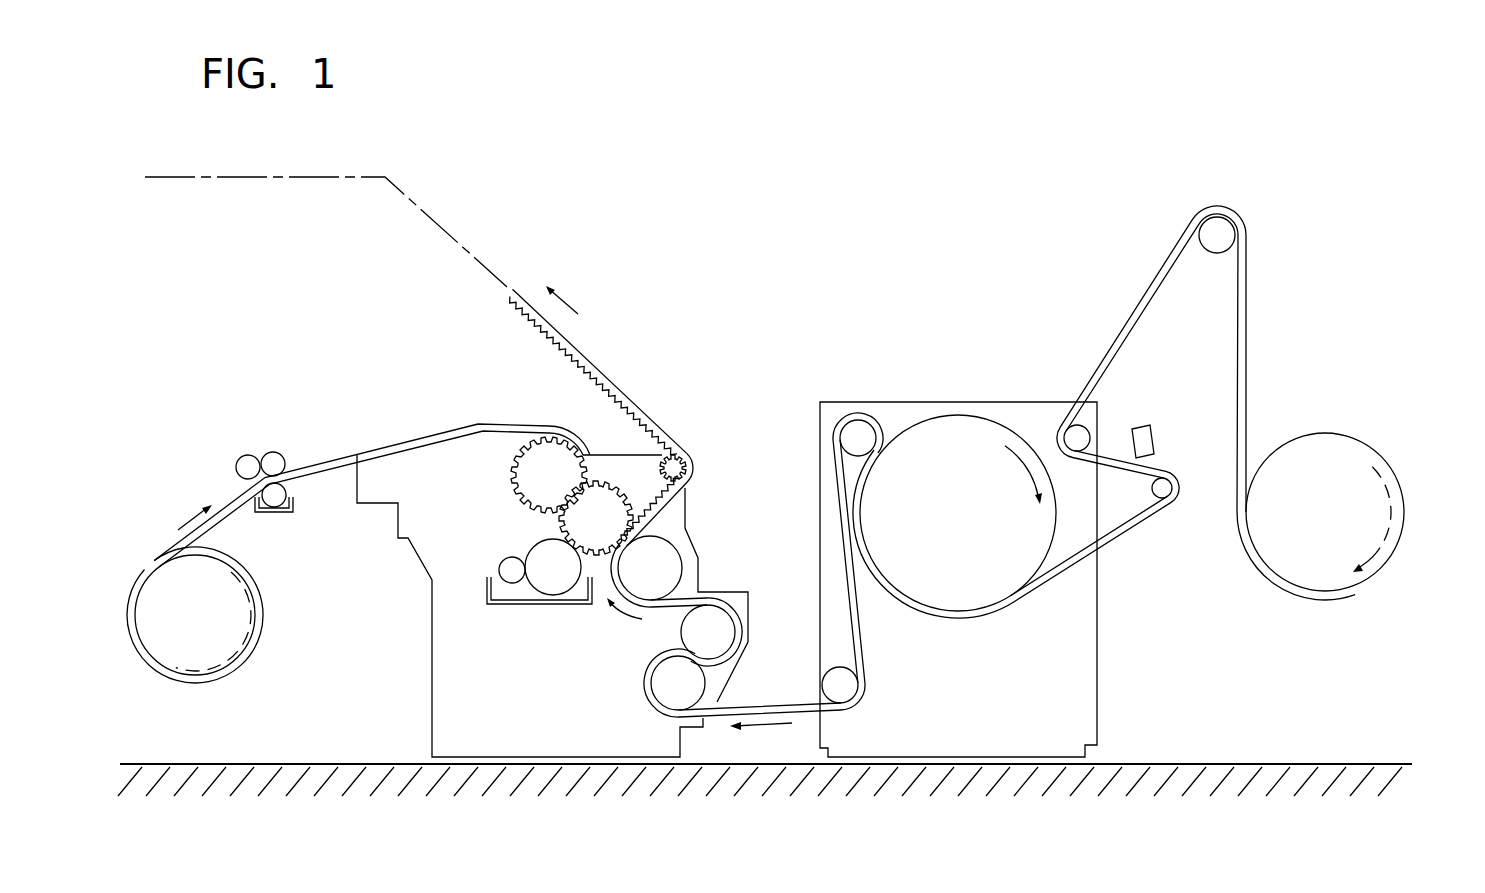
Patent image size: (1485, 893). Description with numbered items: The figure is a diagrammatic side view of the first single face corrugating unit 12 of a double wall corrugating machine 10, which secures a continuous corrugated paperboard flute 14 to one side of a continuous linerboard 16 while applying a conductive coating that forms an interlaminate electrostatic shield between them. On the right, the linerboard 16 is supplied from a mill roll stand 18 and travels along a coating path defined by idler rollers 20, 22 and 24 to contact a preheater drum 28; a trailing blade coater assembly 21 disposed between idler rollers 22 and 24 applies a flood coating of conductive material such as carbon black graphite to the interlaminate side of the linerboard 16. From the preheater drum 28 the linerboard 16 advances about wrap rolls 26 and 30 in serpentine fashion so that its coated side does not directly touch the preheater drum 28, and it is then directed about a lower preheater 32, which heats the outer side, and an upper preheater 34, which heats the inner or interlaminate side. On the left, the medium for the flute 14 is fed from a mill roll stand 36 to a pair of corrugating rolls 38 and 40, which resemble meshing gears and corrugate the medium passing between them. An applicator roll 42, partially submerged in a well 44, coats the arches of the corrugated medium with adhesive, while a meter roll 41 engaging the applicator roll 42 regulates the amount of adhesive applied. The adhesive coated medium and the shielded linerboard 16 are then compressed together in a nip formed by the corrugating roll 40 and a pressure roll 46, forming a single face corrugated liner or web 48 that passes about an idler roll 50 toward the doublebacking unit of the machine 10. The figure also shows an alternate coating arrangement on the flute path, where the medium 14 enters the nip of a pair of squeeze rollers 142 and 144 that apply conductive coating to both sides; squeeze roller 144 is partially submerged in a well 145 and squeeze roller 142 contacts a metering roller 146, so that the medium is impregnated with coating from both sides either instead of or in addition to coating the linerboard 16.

The double wall corrugating machine 10 is at (731, 395).
The first single face corrugating unit 12 is at (535, 702).
The corrugated paperboard flute 14 is at (327, 466).
The linerboard 16 is at (808, 706).
The mill roll stand 18 is at (1335, 521).
The idler roller 20 is at (1226, 248).
The trailing blade coater assembly 21 is at (1146, 440).
The idler roller 22 is at (1075, 437).
The idler roller 24 is at (1163, 499).
The wrap roll 26 is at (856, 428).
The preheater drum 28 is at (961, 532).
The wrap roll 30 is at (846, 690).
The lower preheater 32 is at (684, 700).
The upper preheater 34 is at (712, 630).
The mill roll stand 36 is at (207, 624).
The corrugating roll 38 is at (562, 485).
The corrugating roll 40 is at (606, 528).
The meter roll 41 is at (513, 566).
The applicator roll 42 is at (565, 578).
The well 44 is at (523, 593).
The pressure roll 46 is at (660, 583).
The single face corrugated liner or web 48 is at (662, 432).
The idler roll 50 is at (660, 467).
The squeeze roller 142 is at (266, 453).
The squeeze roller 144 is at (285, 490).
The well 145 is at (292, 511).
The metering roller 146 is at (253, 455).